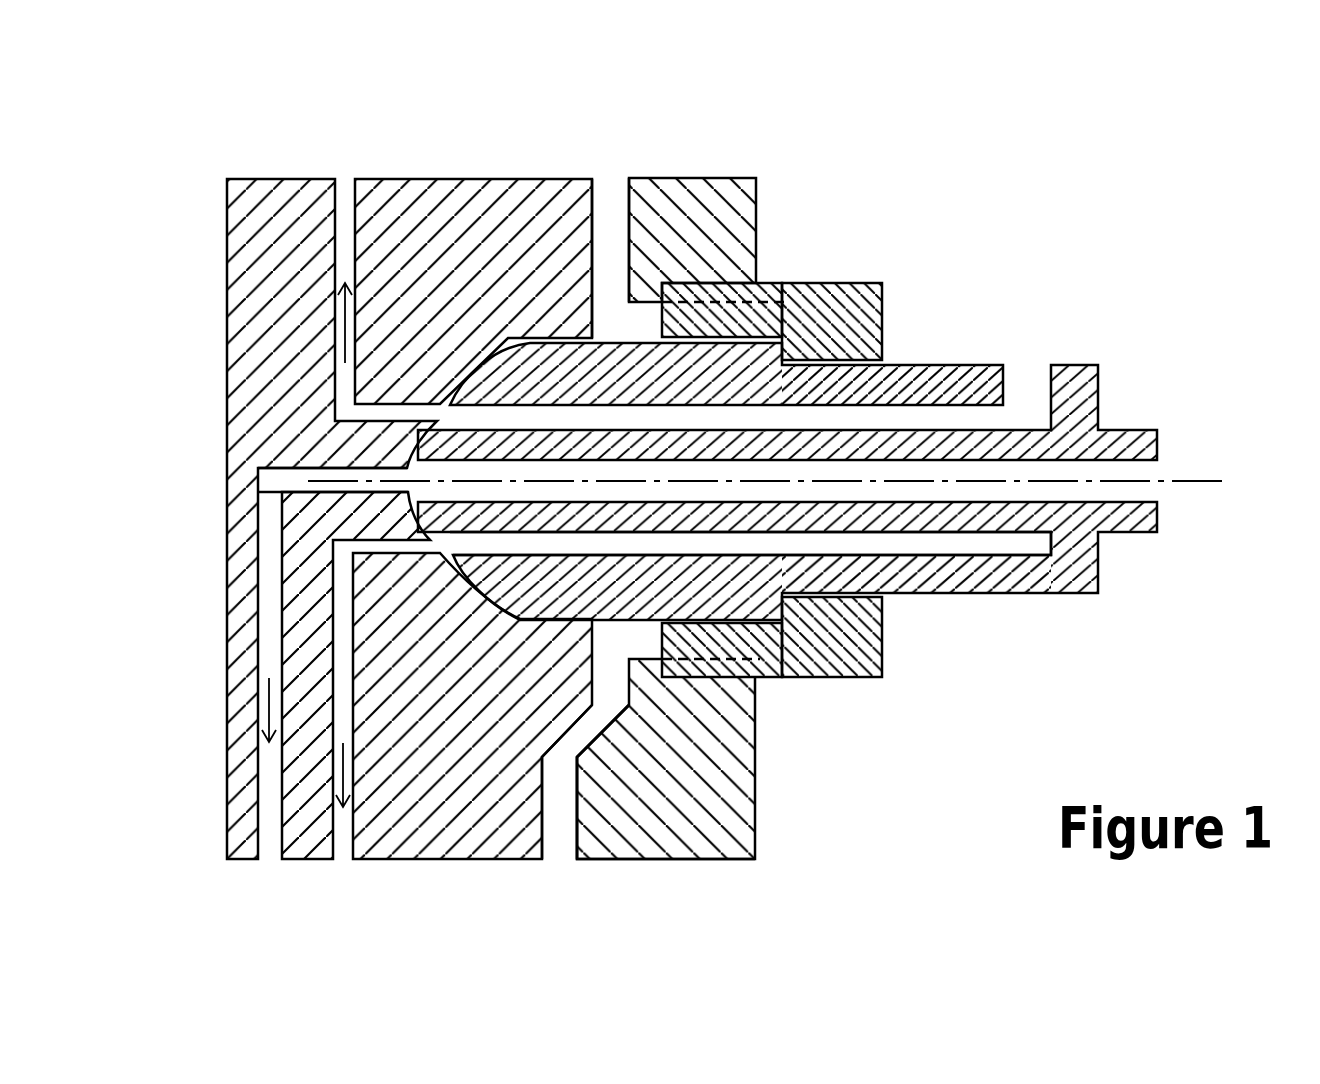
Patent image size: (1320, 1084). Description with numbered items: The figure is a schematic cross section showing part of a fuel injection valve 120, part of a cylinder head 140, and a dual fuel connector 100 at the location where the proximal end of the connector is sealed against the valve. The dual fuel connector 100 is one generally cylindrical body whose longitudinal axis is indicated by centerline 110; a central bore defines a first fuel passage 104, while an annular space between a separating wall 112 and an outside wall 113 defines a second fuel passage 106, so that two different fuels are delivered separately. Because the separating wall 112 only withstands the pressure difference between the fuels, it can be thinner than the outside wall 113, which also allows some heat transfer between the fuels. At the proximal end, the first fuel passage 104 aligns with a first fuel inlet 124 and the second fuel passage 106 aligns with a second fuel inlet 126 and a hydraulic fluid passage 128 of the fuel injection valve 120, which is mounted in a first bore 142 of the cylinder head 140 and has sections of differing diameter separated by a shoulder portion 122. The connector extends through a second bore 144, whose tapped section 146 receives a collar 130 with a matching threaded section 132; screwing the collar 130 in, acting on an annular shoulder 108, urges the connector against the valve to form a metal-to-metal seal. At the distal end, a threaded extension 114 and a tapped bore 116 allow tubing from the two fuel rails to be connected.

The dual fuel connector 100 is at (925, 387).
The first fuel passage 104 is at (905, 488).
The second fuel passage 106 is at (928, 540).
The annular shoulder 108 is at (805, 677).
The centerline 110 is at (1040, 482).
The separating wall 112 is at (903, 503).
The outside wall 113 is at (957, 578).
The threaded extension 114 is at (1128, 520).
The tapped bore 116 is at (1068, 400).
The fuel injection valve 120 is at (268, 313).
The shoulder portion 122 is at (587, 757).
The first fuel inlet 124 is at (338, 475).
The second fuel inlet 126 is at (368, 545).
The hydraulic fluid passage 128 is at (345, 383).
The collar 130 is at (803, 297).
The threaded section 132 is at (772, 293).
The cylinder head 140 is at (710, 775).
The first bore 142 is at (575, 820).
The second bore 144 is at (647, 305).
The tapped section 146 is at (652, 290).